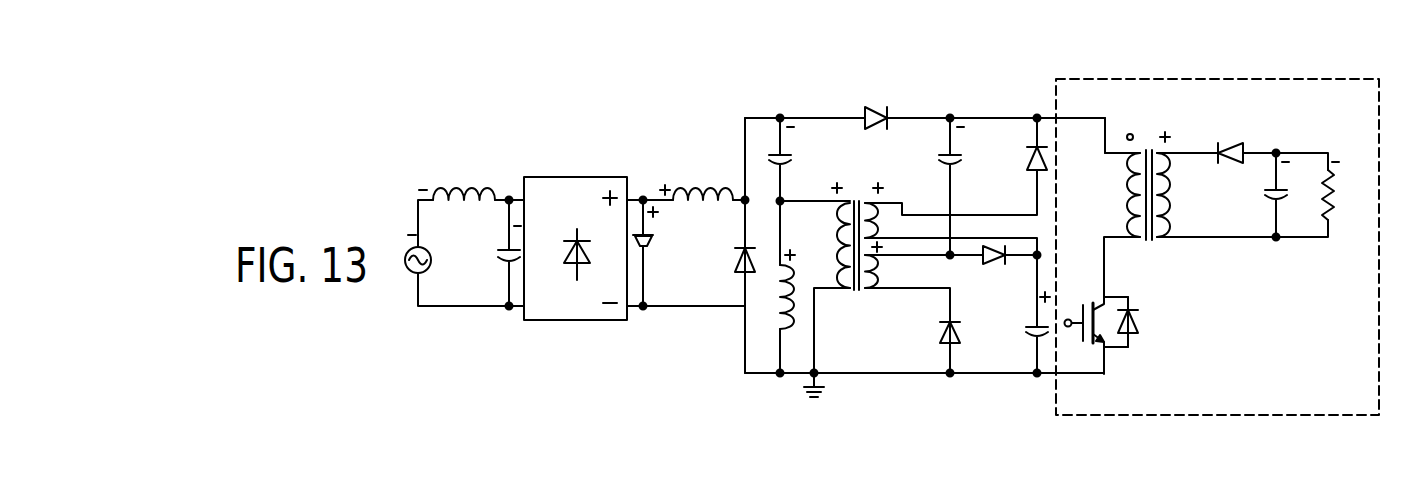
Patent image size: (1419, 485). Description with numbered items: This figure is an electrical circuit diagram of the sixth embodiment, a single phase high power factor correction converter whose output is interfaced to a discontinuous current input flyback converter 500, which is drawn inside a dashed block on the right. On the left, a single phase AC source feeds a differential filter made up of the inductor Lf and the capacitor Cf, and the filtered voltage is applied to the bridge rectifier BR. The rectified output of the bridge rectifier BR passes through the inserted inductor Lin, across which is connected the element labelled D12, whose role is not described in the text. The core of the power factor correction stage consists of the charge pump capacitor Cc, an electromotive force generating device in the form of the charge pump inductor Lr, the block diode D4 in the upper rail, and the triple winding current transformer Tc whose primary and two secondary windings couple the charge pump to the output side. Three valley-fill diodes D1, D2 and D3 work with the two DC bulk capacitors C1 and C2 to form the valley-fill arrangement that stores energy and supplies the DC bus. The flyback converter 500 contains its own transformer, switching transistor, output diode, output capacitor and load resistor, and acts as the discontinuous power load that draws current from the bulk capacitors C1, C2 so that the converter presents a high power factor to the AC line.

The discontinuous current input flyback converter 500 is at (1217, 212).
The inductor Lf is at (464, 173).
The capacitor Cf is at (491, 253).
The bridge rectifier BR is at (562, 346).
The inserted inductor Lin is at (696, 176).
The diode D12 is at (651, 243).
The block diode D4 is at (871, 91).
The charge pump capacitor Cc is at (793, 159).
The charge pump inductor Lr is at (773, 287).
The triple winding current transformer Tc is at (831, 263).
The valley-fill diode D3 is at (994, 274).
The valley-fill diode D1 is at (930, 334).
The DC bulk capacitor C1 is at (935, 186).
The valley-fill diode D2 is at (1018, 148).
The DC bulk capacitor C2 is at (1018, 314).